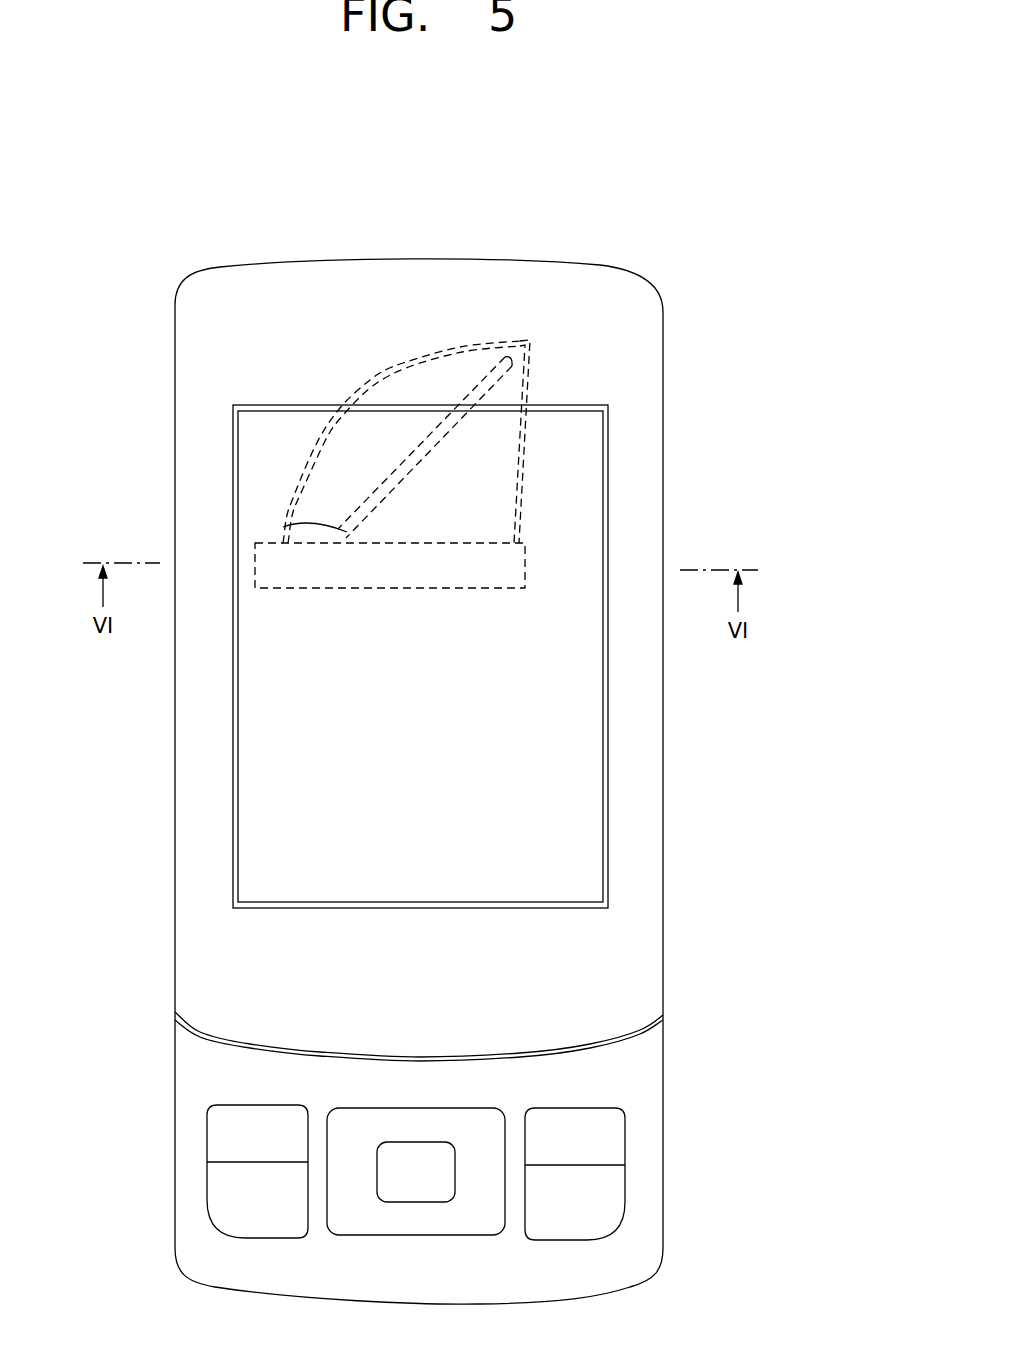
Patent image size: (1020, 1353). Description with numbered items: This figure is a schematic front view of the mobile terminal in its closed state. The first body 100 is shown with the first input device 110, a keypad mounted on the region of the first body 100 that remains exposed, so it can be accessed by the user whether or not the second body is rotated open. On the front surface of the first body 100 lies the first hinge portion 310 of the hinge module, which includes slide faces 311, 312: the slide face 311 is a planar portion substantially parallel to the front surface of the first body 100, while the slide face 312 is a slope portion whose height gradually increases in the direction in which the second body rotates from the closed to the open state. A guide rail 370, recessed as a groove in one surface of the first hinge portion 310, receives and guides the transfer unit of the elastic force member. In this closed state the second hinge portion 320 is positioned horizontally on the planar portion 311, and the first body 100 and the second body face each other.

The first body 100 is at (138, 918).
The first input device 110 is at (613, 1199).
The first hinge portion 310 is at (406, 332).
The slide face 311 is at (363, 385).
The slide face 312 is at (460, 343).
The second hinge portion 320 is at (258, 580).
The guide rail 370 is at (280, 527).